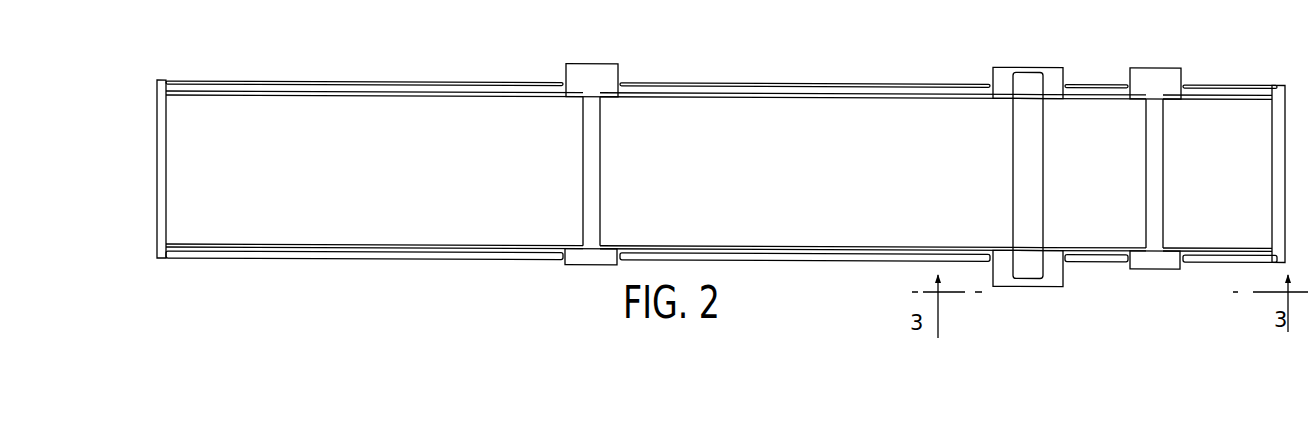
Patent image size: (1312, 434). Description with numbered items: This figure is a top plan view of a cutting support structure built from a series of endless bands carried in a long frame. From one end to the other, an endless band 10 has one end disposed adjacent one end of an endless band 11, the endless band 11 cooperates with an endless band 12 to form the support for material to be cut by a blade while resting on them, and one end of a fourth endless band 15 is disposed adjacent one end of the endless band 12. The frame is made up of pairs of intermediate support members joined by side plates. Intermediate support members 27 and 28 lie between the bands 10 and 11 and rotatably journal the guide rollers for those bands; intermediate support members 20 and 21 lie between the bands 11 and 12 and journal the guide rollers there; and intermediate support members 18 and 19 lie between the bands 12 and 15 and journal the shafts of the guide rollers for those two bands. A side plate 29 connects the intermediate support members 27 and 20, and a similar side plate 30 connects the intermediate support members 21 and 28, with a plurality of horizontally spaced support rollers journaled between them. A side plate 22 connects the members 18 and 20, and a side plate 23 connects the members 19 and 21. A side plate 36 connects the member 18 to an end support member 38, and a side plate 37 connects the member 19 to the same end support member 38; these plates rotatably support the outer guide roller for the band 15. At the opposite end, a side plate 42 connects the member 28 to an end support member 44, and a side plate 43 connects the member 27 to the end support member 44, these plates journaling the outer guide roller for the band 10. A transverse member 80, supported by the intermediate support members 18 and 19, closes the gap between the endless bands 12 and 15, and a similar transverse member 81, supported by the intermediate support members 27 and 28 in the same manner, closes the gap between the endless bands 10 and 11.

The endless band 10 is at (428, 180).
The endless band 11 is at (802, 180).
The endless band 12 is at (1098, 182).
The fourth endless band 15 is at (1222, 182).
The intermediate support member 18 is at (1157, 63).
The intermediate support member 19 is at (1155, 270).
The intermediate support member 20 is at (1021, 63).
The intermediate support member 21 is at (1045, 285).
The side plate 22 is at (1085, 87).
The side plate 23 is at (1098, 263).
The intermediate support member 27 is at (591, 61).
The intermediate support member 28 is at (577, 267).
The side plate 29 is at (742, 84).
The side plate 30 is at (808, 263).
The side plate 36 is at (1224, 87).
The side plate 37 is at (1222, 263).
The end support member 38 is at (1289, 121).
The side plate 42 is at (232, 260).
The side plate 43 is at (232, 83).
The end support member 44 is at (145, 250).
The transverse member 80 is at (1163, 222).
The transverse member 81 is at (600, 166).